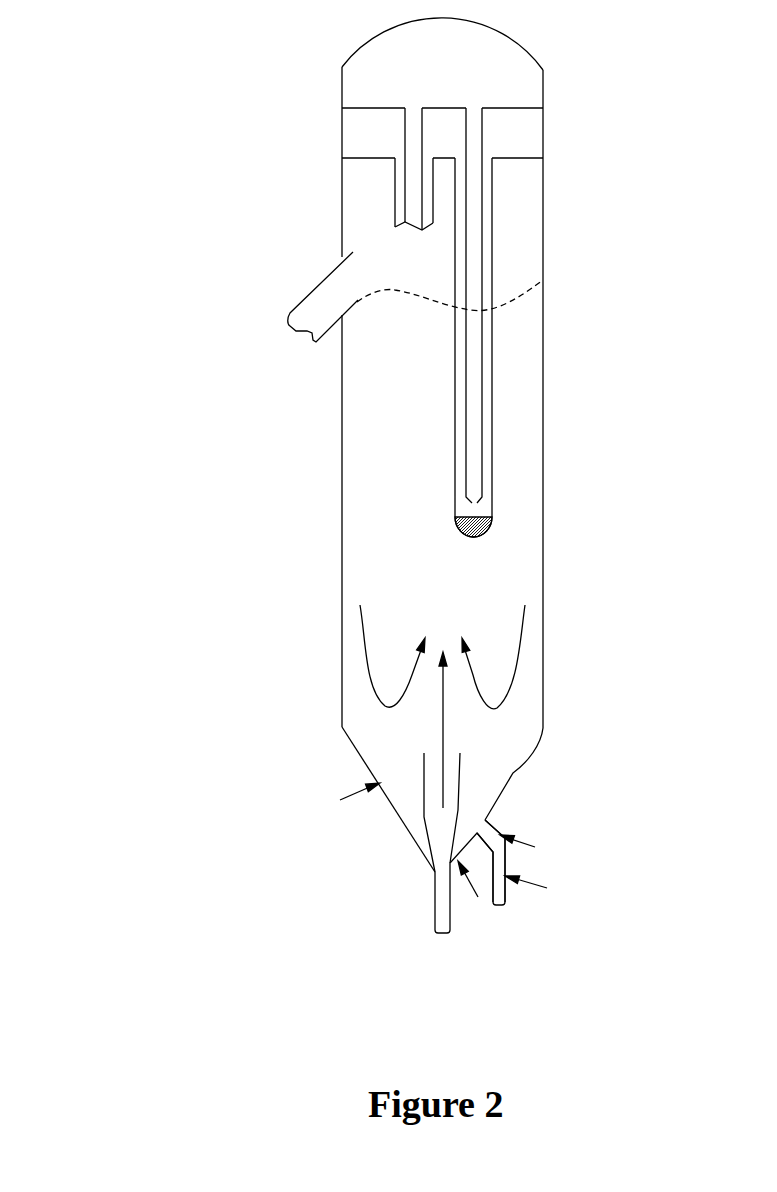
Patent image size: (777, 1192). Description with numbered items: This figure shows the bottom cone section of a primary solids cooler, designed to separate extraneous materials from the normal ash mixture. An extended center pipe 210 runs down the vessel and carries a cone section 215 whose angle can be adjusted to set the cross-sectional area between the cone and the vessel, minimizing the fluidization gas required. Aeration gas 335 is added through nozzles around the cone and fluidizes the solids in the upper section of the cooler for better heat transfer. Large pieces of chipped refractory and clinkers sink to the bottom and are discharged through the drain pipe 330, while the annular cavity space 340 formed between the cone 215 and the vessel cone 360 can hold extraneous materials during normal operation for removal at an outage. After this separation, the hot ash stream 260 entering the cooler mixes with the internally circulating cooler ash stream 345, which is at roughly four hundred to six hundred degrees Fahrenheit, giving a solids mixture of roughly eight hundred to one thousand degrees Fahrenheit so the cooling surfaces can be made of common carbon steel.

The center pipe 210 is at (425, 772).
The cone section 215 is at (427, 818).
The hot ash stream 260 is at (433, 730).
The drain pipe 330 is at (505, 900).
The aeration gas 335 is at (514, 774).
The annular cavity space 340 is at (420, 835).
The internally circulating cooler ash stream 345 is at (442, 657).
The vessel cone 360 is at (425, 817).